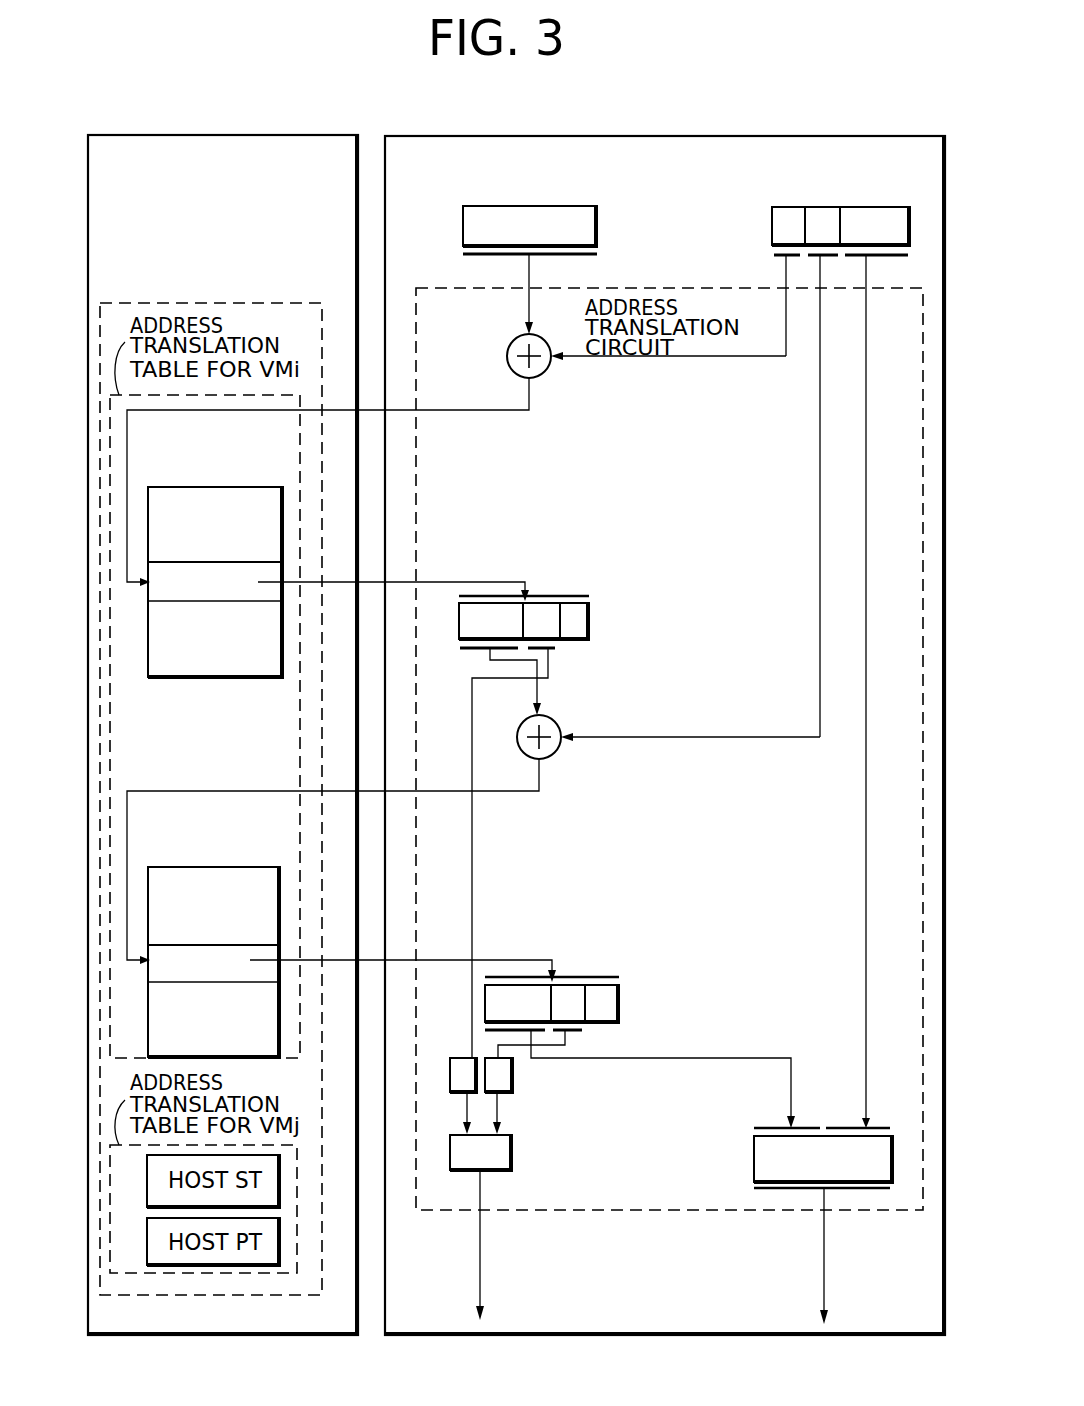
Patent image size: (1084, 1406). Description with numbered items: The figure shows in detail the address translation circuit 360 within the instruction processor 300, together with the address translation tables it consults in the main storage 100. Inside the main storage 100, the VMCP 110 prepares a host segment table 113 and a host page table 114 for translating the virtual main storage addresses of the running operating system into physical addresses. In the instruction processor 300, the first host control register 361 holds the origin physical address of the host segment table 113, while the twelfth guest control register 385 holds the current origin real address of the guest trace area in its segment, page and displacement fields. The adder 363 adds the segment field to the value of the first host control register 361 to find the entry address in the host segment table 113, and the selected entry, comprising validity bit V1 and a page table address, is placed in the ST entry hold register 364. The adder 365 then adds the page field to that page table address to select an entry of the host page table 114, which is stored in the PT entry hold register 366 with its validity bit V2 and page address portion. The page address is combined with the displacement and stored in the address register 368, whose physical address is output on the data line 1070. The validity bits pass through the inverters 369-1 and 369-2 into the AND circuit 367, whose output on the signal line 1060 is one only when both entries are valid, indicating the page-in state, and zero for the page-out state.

The main storage 100 is at (139, 134).
The VMCP 110 is at (132, 303).
The host segment table 113 is at (163, 487).
The host page table 114 is at (162, 867).
The instruction processor 300 is at (517, 135).
The address translation circuit 360 is at (622, 290).
The first host control register 361 is at (463, 216).
The adder 363 is at (543, 376).
The ST entry hold register 364 is at (590, 621).
The adder 365 is at (556, 722).
The PT entry hold register 366 is at (619, 1004).
The AND circuit 367 is at (513, 1158).
The address register 368 is at (754, 1150).
The inverter 369-1 is at (468, 1094).
The inverter 369-2 is at (514, 1079).
The twelfth guest control register 385 is at (772, 212).
The signal line 1060 is at (482, 1238).
The data line 1070 is at (824, 1240).